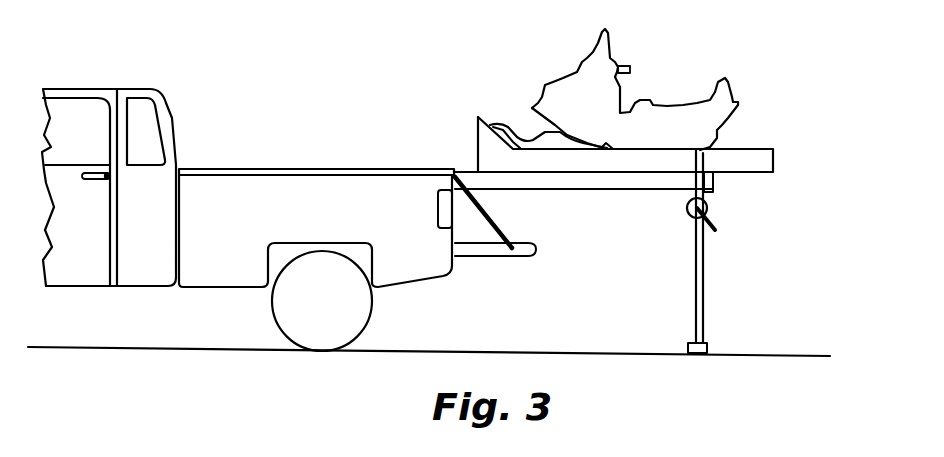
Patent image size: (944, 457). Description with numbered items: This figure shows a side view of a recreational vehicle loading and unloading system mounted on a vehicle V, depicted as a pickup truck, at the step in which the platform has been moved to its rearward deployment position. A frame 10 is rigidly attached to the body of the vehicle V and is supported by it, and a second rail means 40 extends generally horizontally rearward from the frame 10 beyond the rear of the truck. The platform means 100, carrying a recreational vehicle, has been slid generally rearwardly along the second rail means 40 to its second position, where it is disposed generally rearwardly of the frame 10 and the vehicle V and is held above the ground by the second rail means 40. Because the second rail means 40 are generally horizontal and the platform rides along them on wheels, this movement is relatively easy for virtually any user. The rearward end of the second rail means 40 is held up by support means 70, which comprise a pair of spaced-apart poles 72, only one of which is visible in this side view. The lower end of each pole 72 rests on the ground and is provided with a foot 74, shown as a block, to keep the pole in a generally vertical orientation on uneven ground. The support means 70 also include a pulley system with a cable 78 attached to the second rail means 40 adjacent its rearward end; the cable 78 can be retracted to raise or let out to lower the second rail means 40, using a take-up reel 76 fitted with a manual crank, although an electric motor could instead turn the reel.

The vehicle V is at (88, 80).
The frame 10 is at (268, 168).
The second rail means 40 is at (518, 178).
The platform means 100 is at (492, 152).
The support means 70 is at (710, 257).
The poles 72 is at (700, 303).
The feet 74 is at (697, 355).
The take-up reel 76 is at (708, 202).
The cable 78 is at (712, 160).